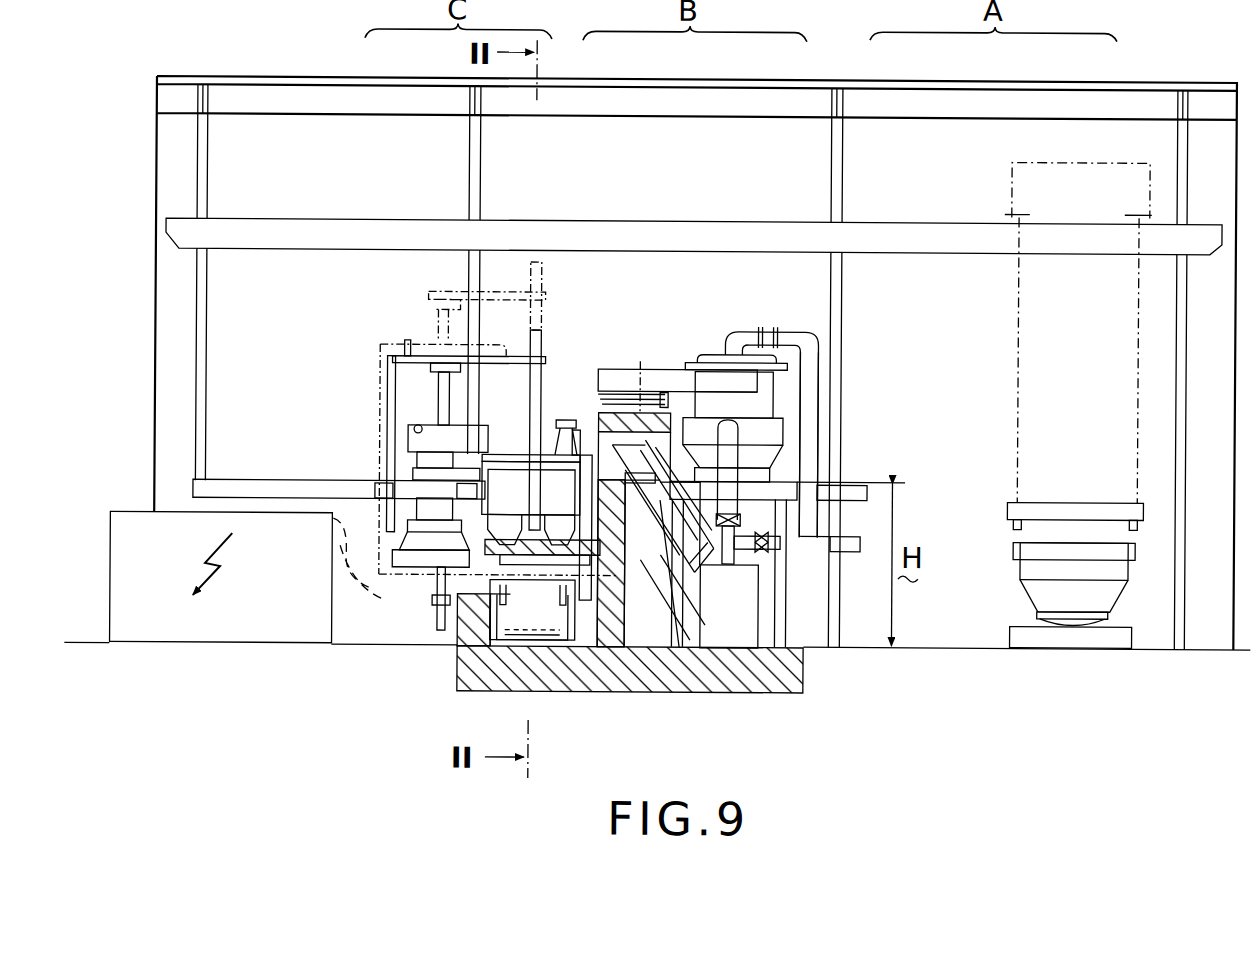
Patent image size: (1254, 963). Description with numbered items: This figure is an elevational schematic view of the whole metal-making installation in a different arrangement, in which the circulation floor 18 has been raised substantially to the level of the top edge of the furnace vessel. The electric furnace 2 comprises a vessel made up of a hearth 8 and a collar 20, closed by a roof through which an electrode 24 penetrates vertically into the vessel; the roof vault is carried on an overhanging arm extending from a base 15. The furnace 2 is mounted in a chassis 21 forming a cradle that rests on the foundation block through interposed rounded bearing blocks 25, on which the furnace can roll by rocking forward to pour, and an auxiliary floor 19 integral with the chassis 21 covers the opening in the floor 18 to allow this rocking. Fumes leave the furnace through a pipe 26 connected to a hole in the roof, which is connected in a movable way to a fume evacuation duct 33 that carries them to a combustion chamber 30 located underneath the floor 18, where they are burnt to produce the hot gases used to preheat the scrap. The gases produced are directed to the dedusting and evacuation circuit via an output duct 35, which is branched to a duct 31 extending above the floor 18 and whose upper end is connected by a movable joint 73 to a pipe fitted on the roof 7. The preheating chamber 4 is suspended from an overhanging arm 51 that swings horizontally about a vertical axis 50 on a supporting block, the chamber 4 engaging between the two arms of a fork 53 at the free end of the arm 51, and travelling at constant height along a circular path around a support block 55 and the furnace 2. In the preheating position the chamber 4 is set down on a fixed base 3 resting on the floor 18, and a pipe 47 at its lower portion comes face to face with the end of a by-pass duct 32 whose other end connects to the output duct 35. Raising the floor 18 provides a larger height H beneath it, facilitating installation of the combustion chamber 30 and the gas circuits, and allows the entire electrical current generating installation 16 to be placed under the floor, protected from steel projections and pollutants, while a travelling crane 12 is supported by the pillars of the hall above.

The electric furnace 2 is at (622, 655).
The fixed base 3 is at (775, 472).
The preheating chamber 4 is at (770, 385).
The roof 7 is at (570, 422).
The hearth 8 is at (470, 561).
The travelling crane 12 is at (1010, 216).
The base 15 is at (428, 490).
The electrical current generating installation 16 is at (292, 522).
The circulation floor 18 is at (237, 480).
The auxiliary floor 19 is at (374, 484).
The collar 20 is at (642, 650).
The chassis 21 is at (378, 590).
The electrode 24 is at (548, 340).
The rounded bearing blocks 25 is at (440, 602).
The pipe 26 is at (585, 455).
The combustion chamber 30 is at (742, 628).
The duct 31 is at (742, 530).
The by-pass duct 32 is at (806, 335).
The fume evacuation duct 33 is at (668, 670).
The output duct 35 is at (845, 552).
The pipe 47 is at (780, 432).
The vertical axis 50 is at (642, 362).
The overhanging arm 51 is at (672, 370).
The fork 53 is at (760, 374).
The support block 55 is at (622, 405).
The movable joint 73 is at (738, 335).